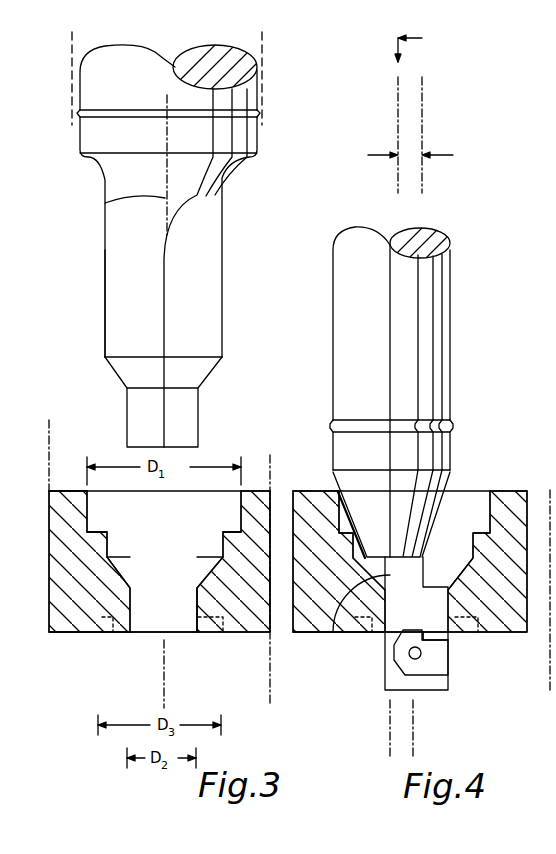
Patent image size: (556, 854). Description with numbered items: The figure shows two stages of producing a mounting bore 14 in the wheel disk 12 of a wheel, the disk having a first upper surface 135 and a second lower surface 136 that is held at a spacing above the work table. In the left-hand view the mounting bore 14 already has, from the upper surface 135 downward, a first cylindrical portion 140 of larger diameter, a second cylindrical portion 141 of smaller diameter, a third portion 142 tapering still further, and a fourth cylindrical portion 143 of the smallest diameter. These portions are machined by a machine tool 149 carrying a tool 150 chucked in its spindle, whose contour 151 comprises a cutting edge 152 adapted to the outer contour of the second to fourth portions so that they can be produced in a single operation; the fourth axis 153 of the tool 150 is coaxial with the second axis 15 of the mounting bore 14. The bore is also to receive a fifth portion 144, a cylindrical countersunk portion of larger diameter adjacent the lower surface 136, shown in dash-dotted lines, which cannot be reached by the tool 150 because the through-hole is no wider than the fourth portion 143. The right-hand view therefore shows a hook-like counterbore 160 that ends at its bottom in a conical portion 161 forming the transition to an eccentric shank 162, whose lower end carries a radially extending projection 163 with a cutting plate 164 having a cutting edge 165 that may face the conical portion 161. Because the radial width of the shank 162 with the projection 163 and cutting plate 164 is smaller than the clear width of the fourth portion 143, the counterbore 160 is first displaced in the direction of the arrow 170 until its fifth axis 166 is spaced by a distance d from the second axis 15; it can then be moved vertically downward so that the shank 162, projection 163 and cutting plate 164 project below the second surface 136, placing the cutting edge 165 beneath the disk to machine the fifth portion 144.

In FIG. 3, the wheel disk 12 is at (245, 605).
In FIG. 4, the wheel disk 12 is at (512, 612).
In FIG. 3, the mounting bore 14 is at (140, 618).
In FIG. 4, the mounting bore 14 is at (472, 510).
In FIG. 3, the second axis 15 is at (163, 650).
In FIG. 4, the second axis 15 is at (423, 88).
In FIG. 3, the first upper surface 135 is at (68, 490).
In FIG. 4, the first upper surface 135 is at (518, 492).
In FIG. 3, the second lower surface 136 is at (63, 633).
In FIG. 4, the second lower surface 136 is at (302, 633).
In FIG. 3, the first cylindrical portion 140 is at (236, 500).
In FIG. 3, the second cylindrical portion 141 is at (217, 550).
In FIG. 3, the third portion 142 is at (200, 575).
In FIG. 3, the fourth cylindrical portion 143 is at (200, 595).
In FIG. 3, the fifth portion 144 is at (103, 620).
In FIG. 4, the fifth portion 144 is at (364, 620).
In FIG. 3, the machine tool 149 is at (262, 52).
In FIG. 3, the tool 150 is at (115, 286).
In FIG. 3, the contour 151 is at (104, 328).
In FIG. 3, the cutting edge 152 is at (170, 283).
In FIG. 3, the fourth axis 153 is at (106, 203).
In FIG. 4, the hook-like counterbore 160 is at (428, 325).
In FIG. 4, the conical portion 161 is at (406, 503).
In FIG. 4, the eccentric shank 162 is at (340, 620).
In FIG. 4, the radially extending projection 163 is at (436, 685).
In FIG. 4, the cutting plate 164 is at (444, 662).
In FIG. 4, the cutting edge 165 is at (433, 625).
In FIG. 4, the fifth axis 166 is at (397, 172).
In FIG. 4, the arrow 170 is at (396, 46).